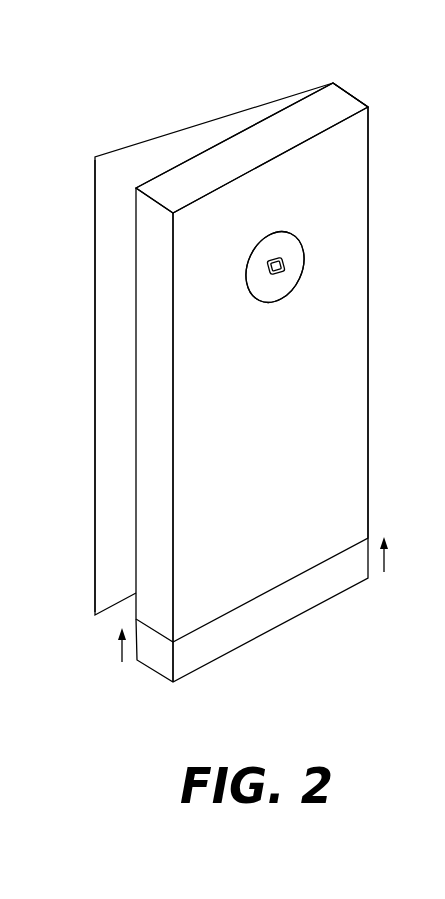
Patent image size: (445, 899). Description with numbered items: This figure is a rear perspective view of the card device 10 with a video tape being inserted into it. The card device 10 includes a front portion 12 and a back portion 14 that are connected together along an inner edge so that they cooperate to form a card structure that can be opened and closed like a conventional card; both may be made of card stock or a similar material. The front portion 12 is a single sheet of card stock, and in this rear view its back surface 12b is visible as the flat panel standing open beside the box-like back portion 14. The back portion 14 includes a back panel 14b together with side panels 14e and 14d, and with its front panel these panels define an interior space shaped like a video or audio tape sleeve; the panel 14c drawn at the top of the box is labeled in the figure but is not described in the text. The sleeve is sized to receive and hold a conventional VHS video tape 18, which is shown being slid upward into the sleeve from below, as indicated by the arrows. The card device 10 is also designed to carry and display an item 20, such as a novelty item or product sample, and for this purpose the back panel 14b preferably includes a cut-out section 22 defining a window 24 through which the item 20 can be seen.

The card device 10 is at (223, 82).
The front portion 12 is at (95, 372).
The back surface 12b is at (100, 480).
The back portion 14 is at (290, 402).
The back panel 14b is at (357, 431).
The box top face 14c is at (277, 142).
The side panel 14d is at (177, 523).
The side panel 14e is at (350, 95).
The VHS video tape 18 is at (275, 615).
The item 20 is at (285, 260).
The cut-out section 22 is at (298, 290).
The window 24 is at (258, 288).